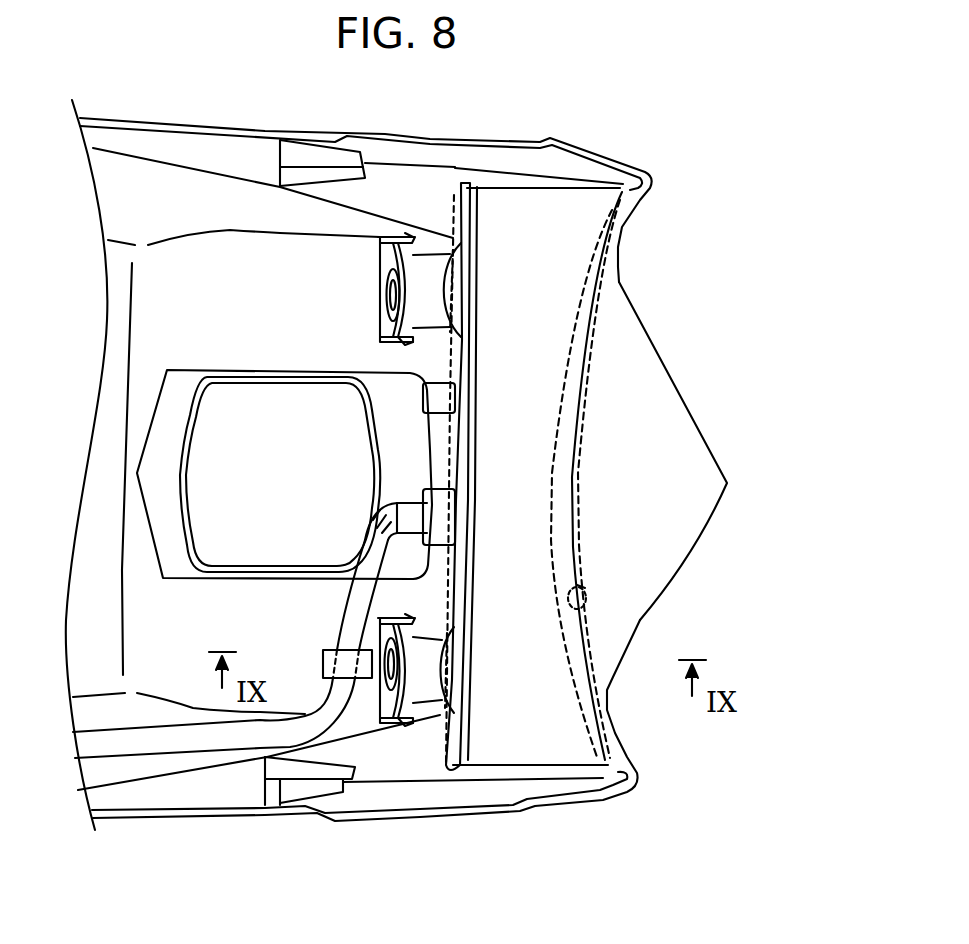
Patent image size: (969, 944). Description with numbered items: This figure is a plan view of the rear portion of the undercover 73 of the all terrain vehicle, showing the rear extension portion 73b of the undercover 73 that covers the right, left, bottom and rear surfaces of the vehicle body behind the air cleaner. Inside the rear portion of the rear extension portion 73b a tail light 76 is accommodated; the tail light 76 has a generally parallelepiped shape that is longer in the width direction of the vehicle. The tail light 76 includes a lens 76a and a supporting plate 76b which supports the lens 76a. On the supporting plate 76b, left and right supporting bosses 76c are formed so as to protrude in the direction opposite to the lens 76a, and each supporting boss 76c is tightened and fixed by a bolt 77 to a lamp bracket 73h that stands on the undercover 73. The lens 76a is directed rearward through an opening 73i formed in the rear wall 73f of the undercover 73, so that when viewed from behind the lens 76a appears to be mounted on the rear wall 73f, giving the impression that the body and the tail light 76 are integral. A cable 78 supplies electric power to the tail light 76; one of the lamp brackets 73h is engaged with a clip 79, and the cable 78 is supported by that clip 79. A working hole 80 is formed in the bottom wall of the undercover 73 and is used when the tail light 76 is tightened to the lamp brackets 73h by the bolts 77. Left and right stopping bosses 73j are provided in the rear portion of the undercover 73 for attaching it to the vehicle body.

The undercover 73 is at (201, 822).
The rear extension portion 73b is at (343, 810).
The stopping boss 73j is at (295, 167).
The lamp bracket 73h is at (390, 253).
The bolt 77 is at (388, 292).
The supporting boss 76c is at (432, 282).
The working hole 80 is at (238, 388).
The rear wall 73f is at (663, 440).
The cable 78 is at (343, 597).
The opening 73i is at (577, 608).
The clip 79 is at (323, 655).
The tail light 76 is at (555, 778).
The lens 76a is at (517, 745).
The supporting plate 76b is at (443, 773).